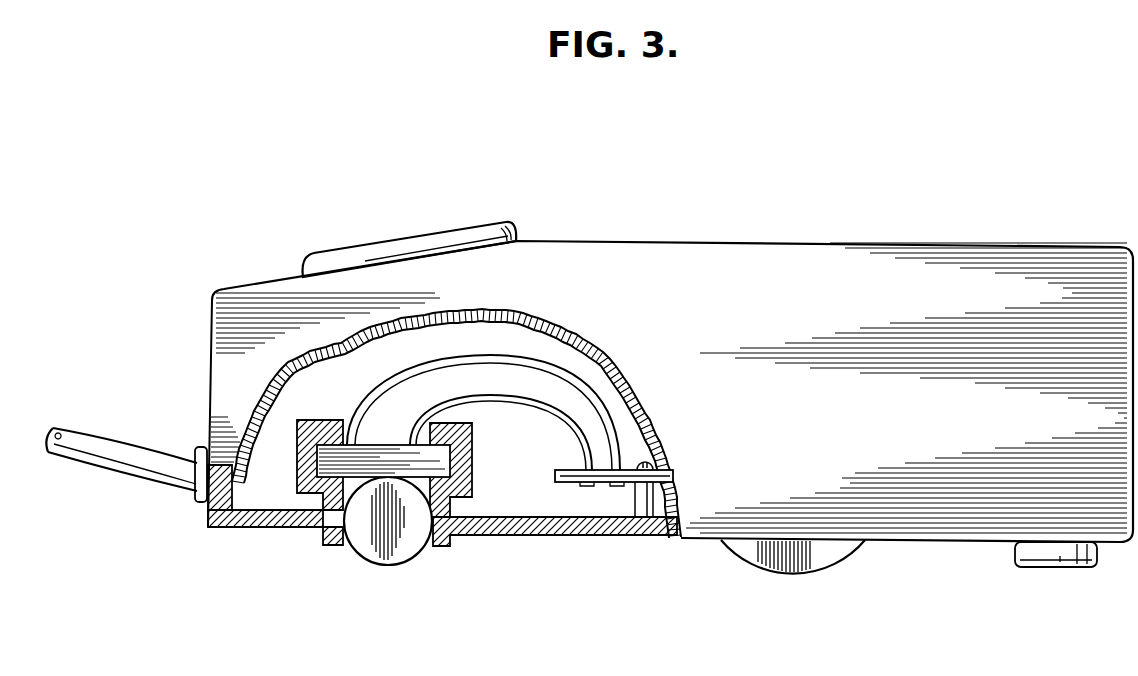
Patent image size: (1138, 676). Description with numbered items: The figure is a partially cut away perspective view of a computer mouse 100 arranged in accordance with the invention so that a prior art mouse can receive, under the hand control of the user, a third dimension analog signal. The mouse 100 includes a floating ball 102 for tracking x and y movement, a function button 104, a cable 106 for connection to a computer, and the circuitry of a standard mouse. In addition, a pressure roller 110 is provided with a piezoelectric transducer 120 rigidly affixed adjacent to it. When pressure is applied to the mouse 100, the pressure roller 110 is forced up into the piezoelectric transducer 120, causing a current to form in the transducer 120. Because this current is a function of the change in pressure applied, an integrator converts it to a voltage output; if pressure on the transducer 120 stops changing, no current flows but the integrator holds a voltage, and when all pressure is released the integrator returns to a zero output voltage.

The mouse 100 is at (879, 222).
The floating ball 102 is at (833, 567).
The function button 104 is at (370, 245).
The cable 106 is at (140, 468).
The pressure roller 110 is at (363, 557).
The piezoelectric transducer 120 is at (470, 458).